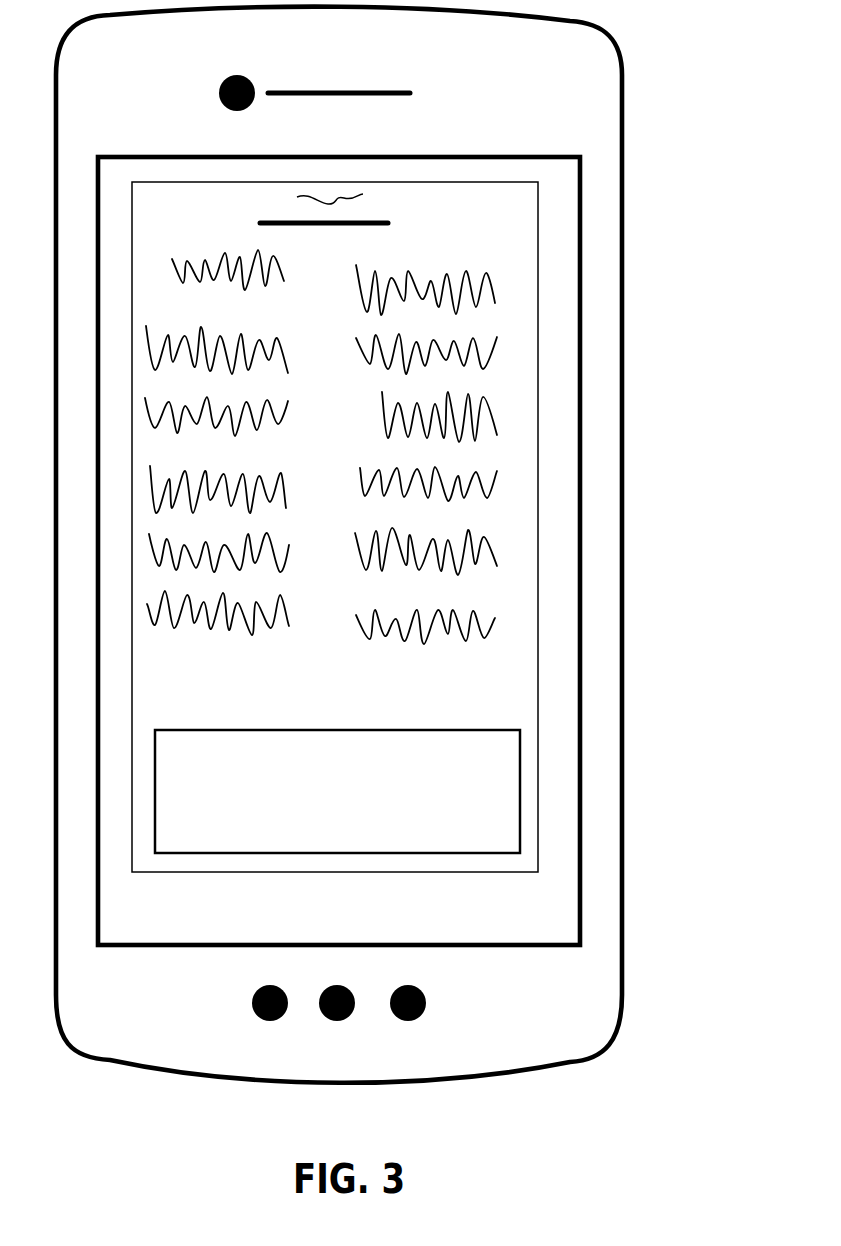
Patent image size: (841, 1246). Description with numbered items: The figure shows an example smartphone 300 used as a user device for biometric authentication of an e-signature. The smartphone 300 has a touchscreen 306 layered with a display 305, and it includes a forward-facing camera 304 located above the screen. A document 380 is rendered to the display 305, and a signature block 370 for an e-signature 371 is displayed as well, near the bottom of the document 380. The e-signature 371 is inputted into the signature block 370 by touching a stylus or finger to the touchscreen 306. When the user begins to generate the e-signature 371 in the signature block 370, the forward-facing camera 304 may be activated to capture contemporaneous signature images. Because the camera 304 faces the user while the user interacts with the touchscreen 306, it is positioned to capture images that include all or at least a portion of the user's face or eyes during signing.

The smartphone 300 is at (707, 26).
The forward-facing camera 304 is at (240, 74).
The display 305 is at (158, 929).
The touchscreen 306 is at (339, 532).
The signature block 370 is at (420, 730).
The e-signature 371 is at (266, 740).
The document 380 is at (523, 211).